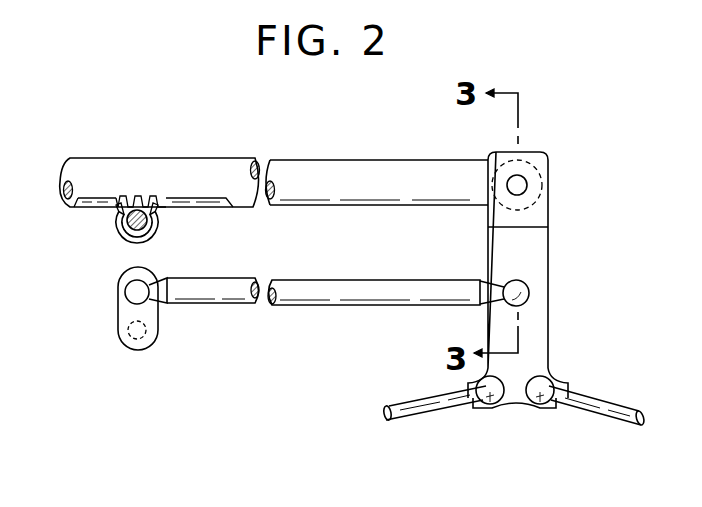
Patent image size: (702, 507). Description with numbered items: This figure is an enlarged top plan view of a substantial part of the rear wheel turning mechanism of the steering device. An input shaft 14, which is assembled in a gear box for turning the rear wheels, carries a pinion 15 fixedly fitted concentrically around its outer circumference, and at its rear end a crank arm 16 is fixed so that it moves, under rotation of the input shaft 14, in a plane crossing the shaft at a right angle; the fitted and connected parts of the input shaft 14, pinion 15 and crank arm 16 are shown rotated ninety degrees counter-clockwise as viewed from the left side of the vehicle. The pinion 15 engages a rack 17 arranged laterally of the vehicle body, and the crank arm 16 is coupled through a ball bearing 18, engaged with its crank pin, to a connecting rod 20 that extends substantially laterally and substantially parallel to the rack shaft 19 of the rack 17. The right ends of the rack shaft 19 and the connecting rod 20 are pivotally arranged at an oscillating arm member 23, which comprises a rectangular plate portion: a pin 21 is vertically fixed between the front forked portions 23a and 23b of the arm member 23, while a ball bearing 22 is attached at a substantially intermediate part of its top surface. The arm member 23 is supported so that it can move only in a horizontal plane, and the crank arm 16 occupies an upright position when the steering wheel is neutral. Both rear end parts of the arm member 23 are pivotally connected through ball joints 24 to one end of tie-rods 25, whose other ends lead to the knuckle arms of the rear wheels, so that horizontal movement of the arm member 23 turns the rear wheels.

The input shaft 14 is at (127, 233).
The pinion 15 is at (158, 237).
The crank arm 16 is at (155, 312).
The rack 17 is at (85, 203).
The ball bearing 18 is at (133, 292).
The rack shaft 19 is at (287, 172).
The connecting rod 20 is at (308, 292).
The pin 21 is at (519, 185).
The ball bearing 22 is at (518, 293).
The oscillating arm member 23 is at (532, 243).
The front forked portion 23a is at (573, 155).
The front forked portion 23b is at (500, 205).
The ball joint 24 is at (491, 402).
The tie-rod 25 is at (414, 412).